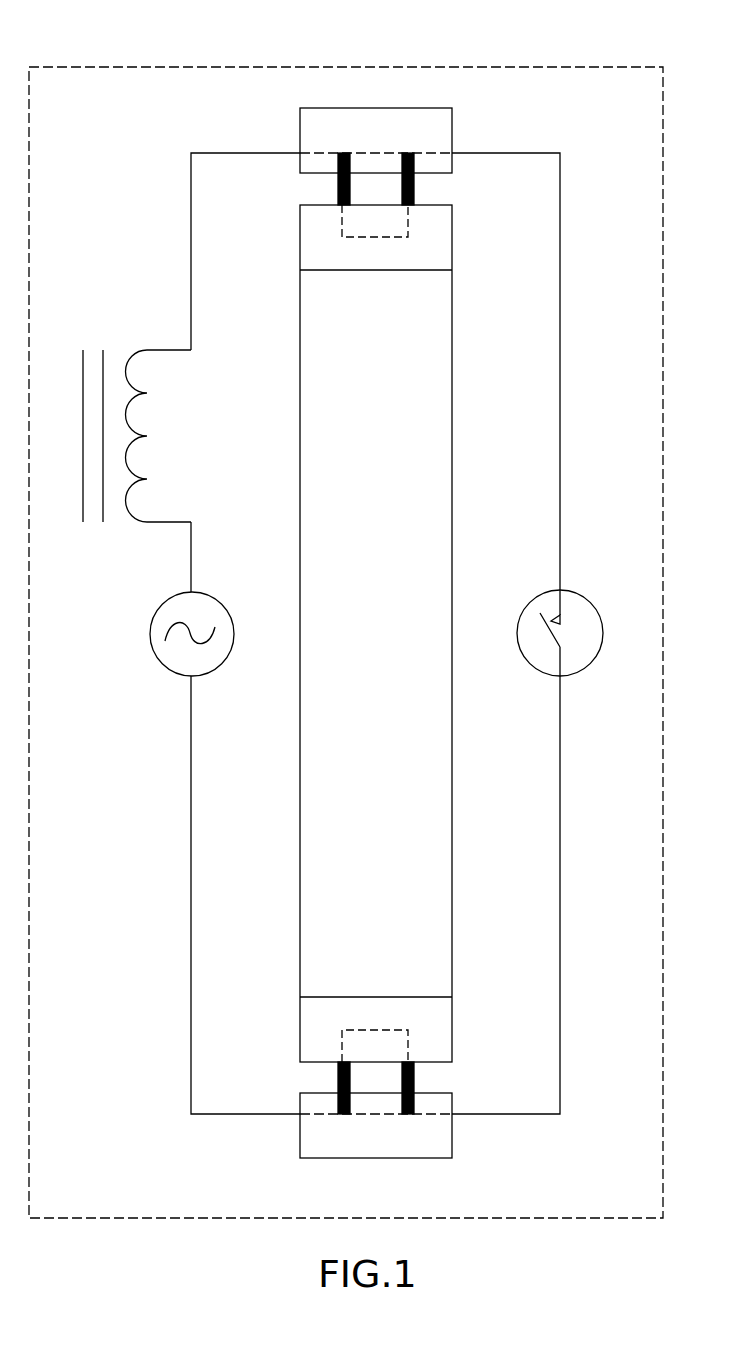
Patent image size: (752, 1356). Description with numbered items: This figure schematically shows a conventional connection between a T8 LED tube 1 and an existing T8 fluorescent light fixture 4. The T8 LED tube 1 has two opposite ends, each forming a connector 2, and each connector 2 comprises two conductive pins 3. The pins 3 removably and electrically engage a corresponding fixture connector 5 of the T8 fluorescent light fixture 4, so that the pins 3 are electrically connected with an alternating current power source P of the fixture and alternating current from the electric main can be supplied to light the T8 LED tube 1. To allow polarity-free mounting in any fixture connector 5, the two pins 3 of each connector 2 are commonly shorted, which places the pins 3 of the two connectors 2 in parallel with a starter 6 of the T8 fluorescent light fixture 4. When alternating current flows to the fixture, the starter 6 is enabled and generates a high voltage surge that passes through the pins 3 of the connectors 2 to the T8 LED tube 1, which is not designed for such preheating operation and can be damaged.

The T8 LED tube 1 is at (433, 362).
The connector 2 is at (433, 249).
The conductive pin 3 is at (338, 193).
The T8 fluorescent light fixture 4 is at (552, 67).
The fixture connector 5 is at (452, 132).
The starter 6 is at (603, 622).
The alternating current power source P is at (150, 628).